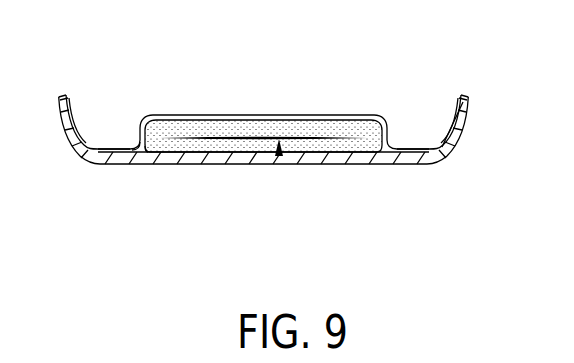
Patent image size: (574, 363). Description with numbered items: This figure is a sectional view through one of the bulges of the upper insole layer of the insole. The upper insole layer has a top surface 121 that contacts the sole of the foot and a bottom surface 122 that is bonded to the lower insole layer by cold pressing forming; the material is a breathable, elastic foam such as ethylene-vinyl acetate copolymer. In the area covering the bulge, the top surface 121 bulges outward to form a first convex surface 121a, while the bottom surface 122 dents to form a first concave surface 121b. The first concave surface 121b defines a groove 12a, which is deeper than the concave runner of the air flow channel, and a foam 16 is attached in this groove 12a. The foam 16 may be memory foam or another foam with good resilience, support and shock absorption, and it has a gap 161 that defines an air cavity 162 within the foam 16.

The groove 12a is at (384, 153).
The top surface 121 is at (115, 150).
The first convex surface 121a is at (308, 116).
The first concave surface 121b is at (329, 140).
The bottom surface 122 is at (148, 155).
The foam 16 is at (213, 128).
The gap 161 is at (238, 140).
The air cavity 162 is at (280, 156).